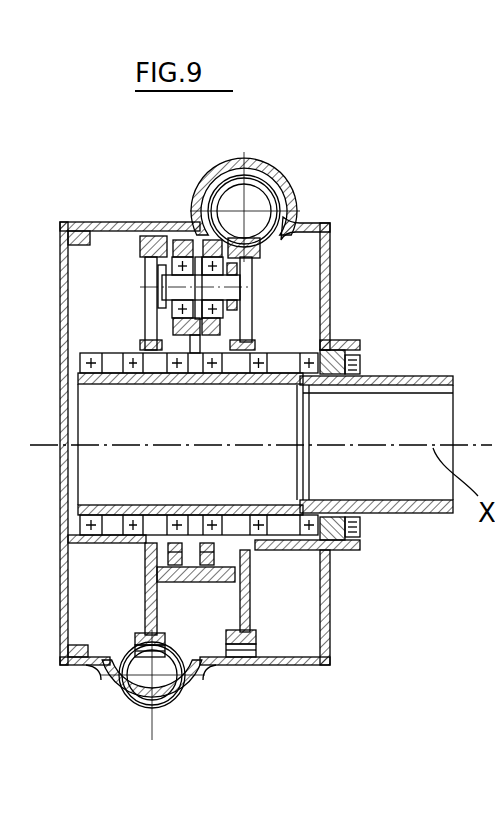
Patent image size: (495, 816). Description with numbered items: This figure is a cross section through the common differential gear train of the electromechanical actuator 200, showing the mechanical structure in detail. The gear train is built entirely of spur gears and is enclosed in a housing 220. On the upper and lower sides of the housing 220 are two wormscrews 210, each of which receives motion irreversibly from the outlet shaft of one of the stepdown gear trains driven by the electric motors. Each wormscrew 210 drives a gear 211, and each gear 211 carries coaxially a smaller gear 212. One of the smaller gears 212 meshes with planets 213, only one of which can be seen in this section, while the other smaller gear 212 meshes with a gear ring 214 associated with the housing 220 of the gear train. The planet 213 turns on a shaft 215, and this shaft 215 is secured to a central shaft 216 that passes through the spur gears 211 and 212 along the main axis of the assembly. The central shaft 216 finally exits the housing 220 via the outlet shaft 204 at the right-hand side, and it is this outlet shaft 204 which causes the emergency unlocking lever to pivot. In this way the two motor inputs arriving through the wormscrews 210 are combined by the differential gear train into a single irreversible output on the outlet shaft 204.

The electromechanical actuator 200 is at (318, 140).
The outlet shaft 204 is at (420, 375).
The wormscrew 210 is at (288, 192).
The gear 211 is at (145, 606).
The smaller gear 212 is at (170, 545).
The planet 213 is at (182, 238).
The gear ring 214 is at (175, 222).
The shaft 215 is at (242, 287).
The central shaft 216 is at (140, 378).
The housing 220 is at (105, 221).